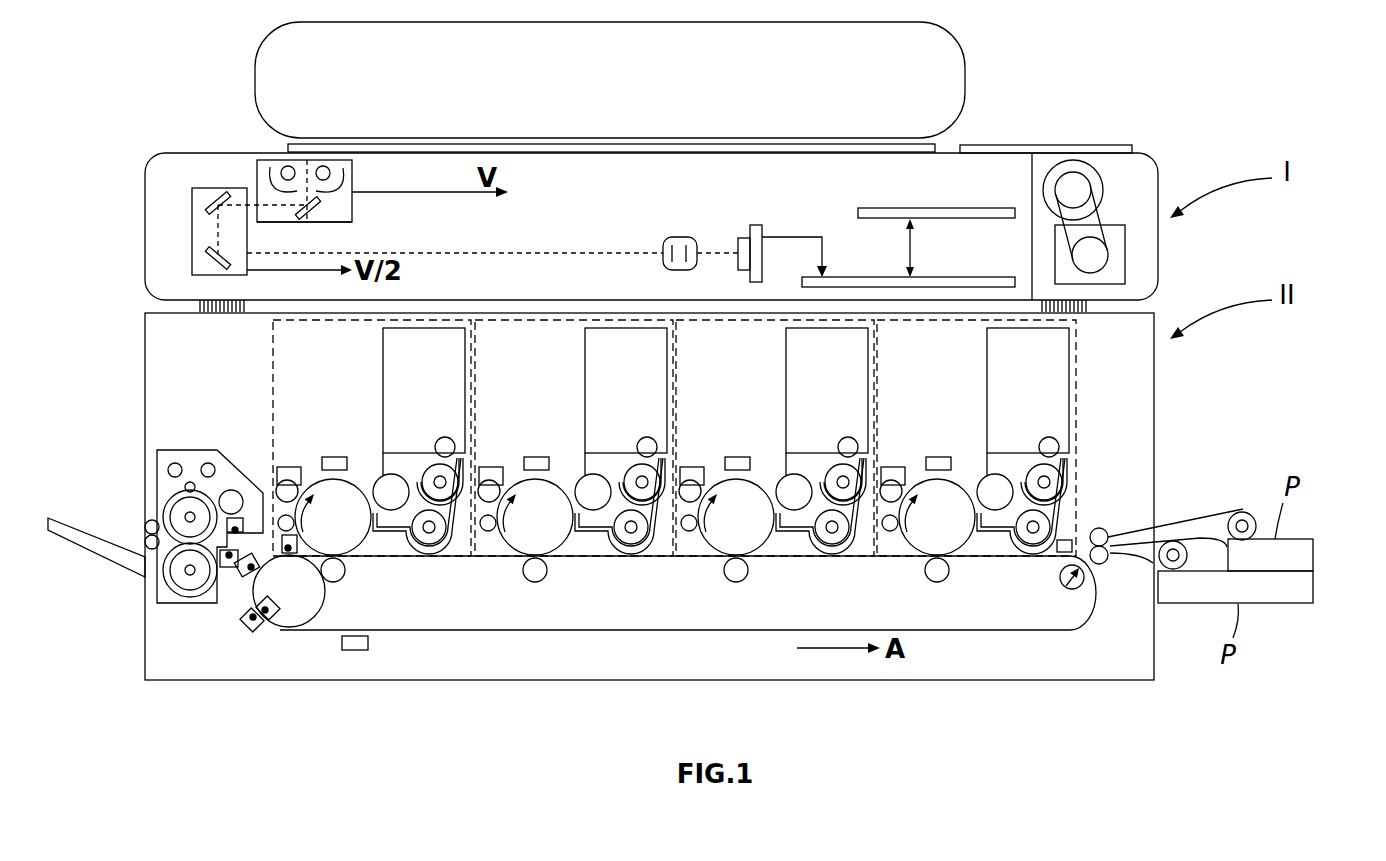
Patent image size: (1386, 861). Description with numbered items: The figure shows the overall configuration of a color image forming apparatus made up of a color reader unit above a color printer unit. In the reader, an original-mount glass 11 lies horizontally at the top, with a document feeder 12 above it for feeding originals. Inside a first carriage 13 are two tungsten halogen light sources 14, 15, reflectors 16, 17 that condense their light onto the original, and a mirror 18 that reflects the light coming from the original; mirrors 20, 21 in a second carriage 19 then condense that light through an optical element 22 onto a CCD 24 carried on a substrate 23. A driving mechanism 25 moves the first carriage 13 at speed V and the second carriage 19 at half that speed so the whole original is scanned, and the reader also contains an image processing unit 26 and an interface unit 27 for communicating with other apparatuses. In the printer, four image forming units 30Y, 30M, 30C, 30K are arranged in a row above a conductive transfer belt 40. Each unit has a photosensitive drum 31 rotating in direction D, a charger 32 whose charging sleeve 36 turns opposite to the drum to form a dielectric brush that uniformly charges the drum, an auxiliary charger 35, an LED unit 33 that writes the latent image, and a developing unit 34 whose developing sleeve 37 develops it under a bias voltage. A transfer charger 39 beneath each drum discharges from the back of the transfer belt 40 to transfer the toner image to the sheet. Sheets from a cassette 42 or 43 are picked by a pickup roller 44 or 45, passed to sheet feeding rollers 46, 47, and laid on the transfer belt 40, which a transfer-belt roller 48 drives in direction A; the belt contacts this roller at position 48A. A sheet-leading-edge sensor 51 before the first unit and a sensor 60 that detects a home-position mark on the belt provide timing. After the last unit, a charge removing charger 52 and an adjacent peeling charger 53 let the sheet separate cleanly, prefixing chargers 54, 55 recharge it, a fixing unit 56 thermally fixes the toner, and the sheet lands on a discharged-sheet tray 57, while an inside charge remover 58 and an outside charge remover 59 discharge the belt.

The original-mount glass 11 is at (320, 143).
The document feeder 12 is at (258, 52).
The first carriage 13 is at (347, 222).
The light source 14 is at (283, 165).
The light source 15 is at (330, 180).
The reflector 16 is at (268, 186).
The reflector 17 is at (356, 190).
The mirror 18 is at (306, 217).
The second carriage 19 is at (192, 232).
The mirror 20 is at (208, 202).
The mirror 21 is at (207, 262).
The imaging lens 22 is at (668, 240).
The substrate 23 is at (762, 230).
The CCD 24 is at (742, 238).
The driving mechanism 25 is at (1126, 215).
The image processing unit 26 is at (950, 277).
The interface unit 27 is at (956, 208).
The K-image forming unit 30K is at (272, 390).
The C-image forming unit 30C is at (545, 325).
The M-image forming unit 30M is at (705, 325).
The Y-image forming unit 30Y is at (1082, 385).
The photosensitive drum 31 is at (357, 537).
The charger 32 is at (283, 466).
The LED unit 33 is at (334, 457).
The developing unit 34 is at (383, 358).
The auxiliary charger 35 is at (288, 550).
The charging sleeve 36 is at (299, 467).
The developing sleeve 37 is at (382, 482).
The transfer charger 39 is at (345, 577).
The transfer belt 40 is at (493, 630).
The cassette 42 is at (1315, 592).
The cassette 43 is at (1315, 558).
The pickup roller 44 is at (1174, 542).
The pickup roller 45 is at (1243, 512).
The sheet feeding roller 46 is at (1102, 528).
The sheet feeding roller 47 is at (1104, 565).
The transfer-belt roller 48 is at (1060, 582).
The position 48A is at (1068, 590).
The sheet-leading-edge sensor 51 is at (1058, 550).
The charge removing charger 52 is at (290, 530).
The peeling charger 53 is at (286, 607).
The prefixing charger 54 is at (243, 498).
The prefixing charger 55 is at (232, 575).
The fixing unit 56 is at (185, 455).
The discharged-sheet tray 57 is at (90, 532).
The inside charge remover 58 is at (273, 623).
The outside charge remover 59 is at (245, 630).
The sensor 60 is at (356, 650).